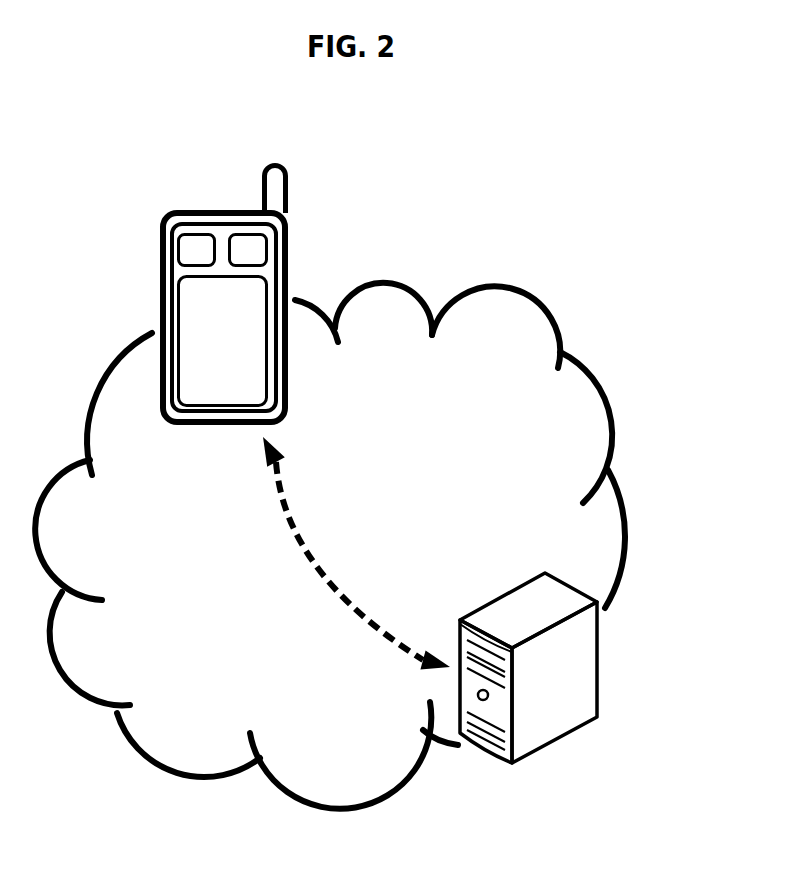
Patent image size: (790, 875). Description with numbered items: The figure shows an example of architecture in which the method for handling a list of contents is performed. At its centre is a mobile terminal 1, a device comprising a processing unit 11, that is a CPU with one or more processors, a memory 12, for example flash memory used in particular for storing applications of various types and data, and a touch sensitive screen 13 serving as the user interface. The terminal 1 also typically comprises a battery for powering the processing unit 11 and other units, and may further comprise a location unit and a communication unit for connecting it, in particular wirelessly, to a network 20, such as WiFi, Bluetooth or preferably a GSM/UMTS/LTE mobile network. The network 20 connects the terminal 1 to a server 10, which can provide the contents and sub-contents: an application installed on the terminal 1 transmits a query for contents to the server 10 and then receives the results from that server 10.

The mobile terminal 1 is at (199, 294).
The processing unit 11 is at (197, 250).
The memory 12 is at (248, 250).
The touch sensitive screen 13 is at (211, 349).
The server 10 is at (597, 668).
The network 20 is at (627, 541).